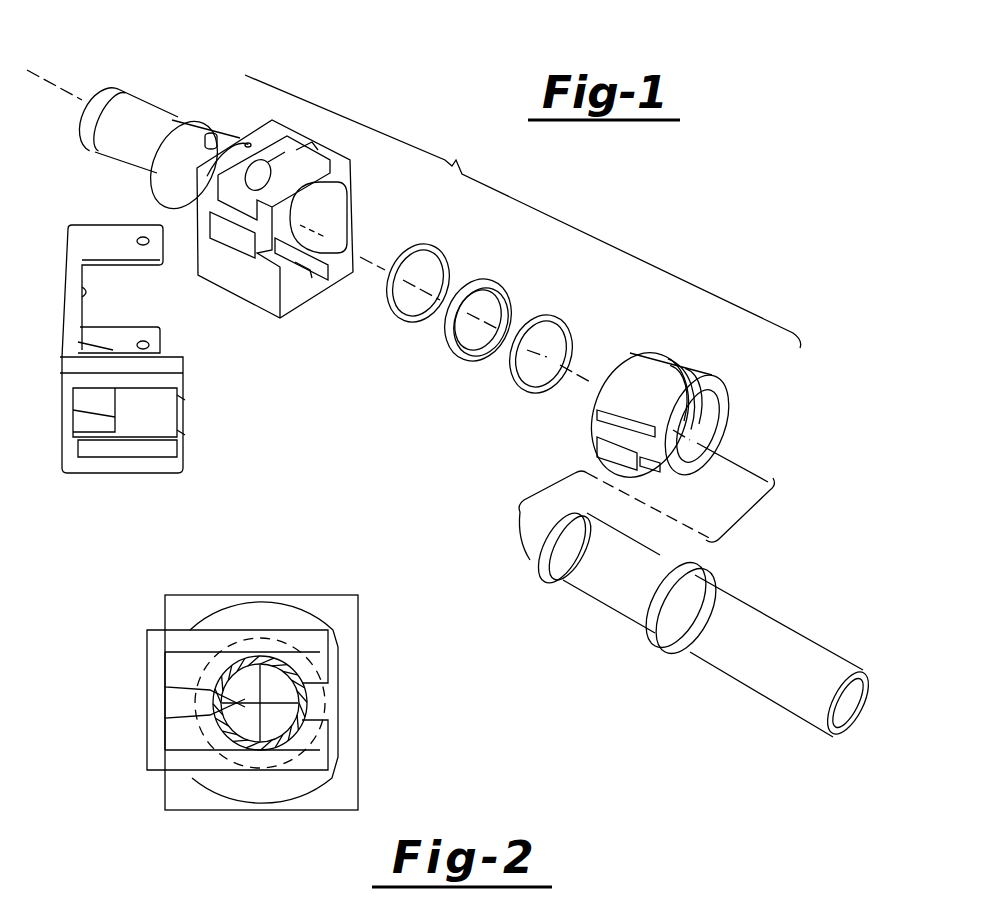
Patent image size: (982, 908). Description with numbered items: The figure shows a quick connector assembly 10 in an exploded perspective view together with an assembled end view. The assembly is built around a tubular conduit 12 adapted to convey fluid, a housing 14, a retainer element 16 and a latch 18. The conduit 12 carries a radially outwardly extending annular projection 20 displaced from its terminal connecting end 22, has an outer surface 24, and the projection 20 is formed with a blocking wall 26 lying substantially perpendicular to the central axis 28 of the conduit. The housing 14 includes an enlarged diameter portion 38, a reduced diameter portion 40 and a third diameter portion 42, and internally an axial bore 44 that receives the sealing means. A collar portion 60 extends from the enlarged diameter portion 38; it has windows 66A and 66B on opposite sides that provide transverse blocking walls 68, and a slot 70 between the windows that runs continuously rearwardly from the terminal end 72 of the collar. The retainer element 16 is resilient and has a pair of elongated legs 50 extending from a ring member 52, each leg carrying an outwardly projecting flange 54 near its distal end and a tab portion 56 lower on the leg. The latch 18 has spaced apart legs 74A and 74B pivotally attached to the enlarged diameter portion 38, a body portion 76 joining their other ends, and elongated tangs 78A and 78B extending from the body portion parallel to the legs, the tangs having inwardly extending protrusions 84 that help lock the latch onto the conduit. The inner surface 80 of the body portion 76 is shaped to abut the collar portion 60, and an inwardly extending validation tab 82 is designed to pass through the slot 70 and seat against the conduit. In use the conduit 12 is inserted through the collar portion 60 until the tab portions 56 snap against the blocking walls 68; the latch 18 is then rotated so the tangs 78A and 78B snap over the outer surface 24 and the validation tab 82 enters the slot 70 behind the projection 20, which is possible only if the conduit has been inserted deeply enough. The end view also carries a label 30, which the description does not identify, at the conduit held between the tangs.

In FIG. 1, the quick connector assembly 10 is at (523, 211).
In FIG. 1, the tubular conduit 12 is at (788, 634).
In FIG. 1, the housing 14 is at (155, 100).
In FIG. 1, the retainer element 16 is at (681, 400).
In FIG. 1, the latching means 18 is at (136, 347).
In FIG. 1, the radially outwardly extending projection 20 is at (690, 570).
In FIG. 1, the terminal connecting end 22 is at (560, 524).
In FIG. 1, the outer surface 24 is at (813, 657).
In FIG. 1, the blocking wall 26 is at (720, 572).
In FIG. 1, the central axis 28 is at (511, 551).
In FIG. 2, the tube cross-section 30 is at (307, 710).
In FIG. 1, the enlarged diameter portion 38 is at (227, 127).
In FIG. 1, the reduced diameter portion 40 is at (153, 110).
In FIG. 1, the third diameter portion 42 is at (197, 125).
In FIG. 1, the axial bore 44 is at (175, 140).
In FIG. 1, the elongated legs 50 is at (660, 480).
In FIG. 1, the ring member 52 is at (622, 353).
In FIG. 1, the outwardly projecting flange 54 is at (714, 392).
In FIG. 1, the tab portion 56 is at (660, 360).
In FIG. 1, the collar portion 60 is at (292, 128).
In FIG. 1, the window 66A is at (288, 160).
In FIG. 1, the window 66B is at (295, 273).
In FIG. 1, the transverse blocking walls 68 is at (340, 170).
In FIG. 1, the slot 70 is at (253, 245).
In FIG. 1, the terminal end 72 is at (287, 307).
In FIG. 1, the leg 74A is at (86, 233).
In FIG. 1, the leg 74B is at (123, 337).
In FIG. 1, the body portion 76 is at (60, 387).
In FIG. 1, the elongated tang 78A is at (172, 360).
In FIG. 2, the elongated tang 78A is at (203, 637).
In FIG. 1, the elongated tang 78B is at (117, 457).
In FIG. 2, the elongated tang 78B is at (205, 760).
In FIG. 1, the inner surface 80 is at (83, 290).
In FIG. 1, the validation tab 82 is at (118, 410).
In FIG. 2, the validation tab 82 is at (177, 703).
In FIG. 1, the inwardly extending protrusions 84 is at (185, 435).